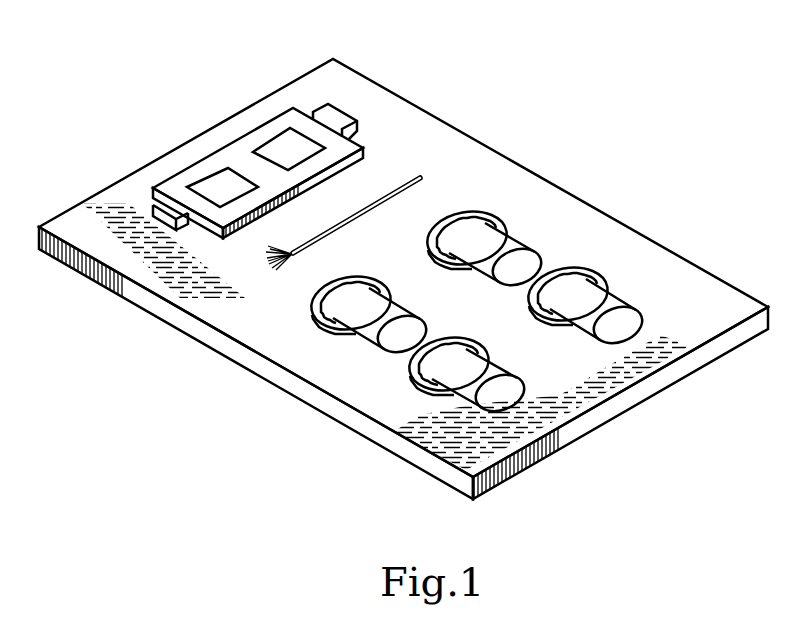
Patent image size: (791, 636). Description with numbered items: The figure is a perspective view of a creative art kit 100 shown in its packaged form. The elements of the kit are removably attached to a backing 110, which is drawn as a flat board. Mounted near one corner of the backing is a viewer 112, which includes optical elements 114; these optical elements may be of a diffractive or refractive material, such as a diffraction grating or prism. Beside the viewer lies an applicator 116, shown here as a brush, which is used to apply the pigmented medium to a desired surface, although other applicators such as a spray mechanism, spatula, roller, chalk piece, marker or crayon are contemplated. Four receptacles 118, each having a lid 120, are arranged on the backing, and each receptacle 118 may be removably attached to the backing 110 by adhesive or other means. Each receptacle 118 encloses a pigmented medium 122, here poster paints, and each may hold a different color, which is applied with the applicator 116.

The creative art kit 100 is at (550, 58).
The backing 110 is at (328, 75).
The viewer 112 is at (173, 187).
The optical elements 114 is at (287, 145).
The applicator 116 is at (420, 178).
The receptacle 118 is at (518, 255).
The lid 120 is at (487, 216).
The pigmented medium 122 is at (453, 274).